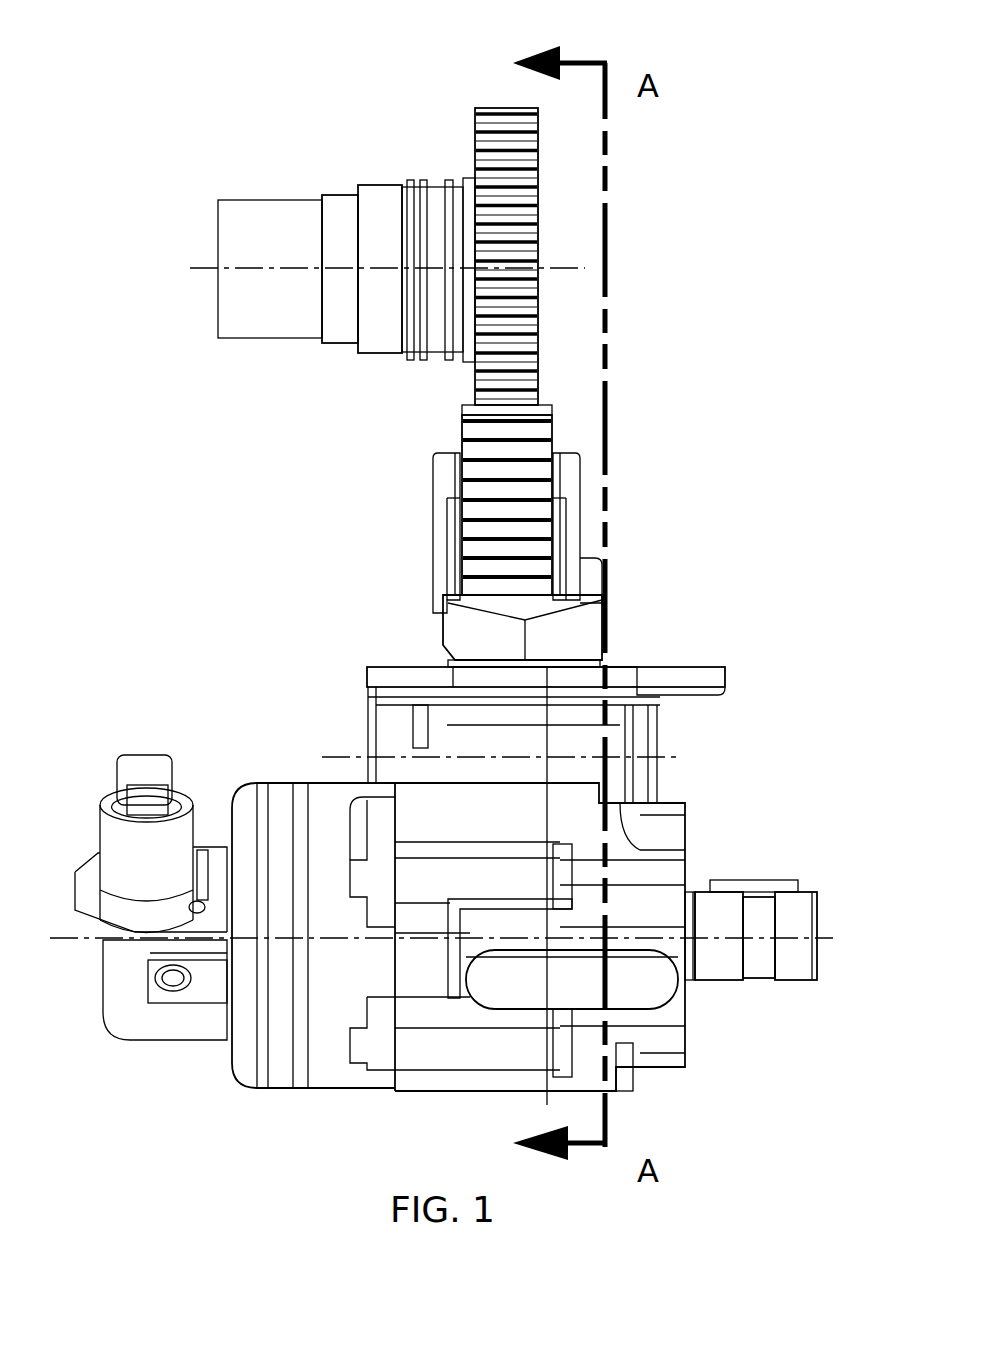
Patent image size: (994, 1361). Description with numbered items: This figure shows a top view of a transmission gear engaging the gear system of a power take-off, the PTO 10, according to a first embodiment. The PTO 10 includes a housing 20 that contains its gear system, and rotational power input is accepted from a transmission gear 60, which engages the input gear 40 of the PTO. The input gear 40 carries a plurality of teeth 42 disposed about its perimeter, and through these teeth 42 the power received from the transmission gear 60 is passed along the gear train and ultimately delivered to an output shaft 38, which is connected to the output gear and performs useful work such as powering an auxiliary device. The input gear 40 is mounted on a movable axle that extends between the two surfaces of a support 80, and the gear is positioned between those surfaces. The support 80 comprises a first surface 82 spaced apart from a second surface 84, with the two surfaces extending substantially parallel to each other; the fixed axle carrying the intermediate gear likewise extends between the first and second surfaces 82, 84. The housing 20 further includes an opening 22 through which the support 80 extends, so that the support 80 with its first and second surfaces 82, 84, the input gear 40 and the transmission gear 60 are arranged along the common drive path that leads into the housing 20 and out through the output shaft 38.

The PTO 10 is at (700, 569).
The housing 20 is at (725, 676).
The opening 22 is at (622, 666).
The output shaft 38 is at (818, 960).
The input gear 40 is at (462, 428).
The teeth 42 is at (515, 455).
The transmission gear 60 is at (475, 152).
The support 80 is at (445, 633).
The first surface 82 is at (433, 508).
The second surface 84 is at (580, 488).